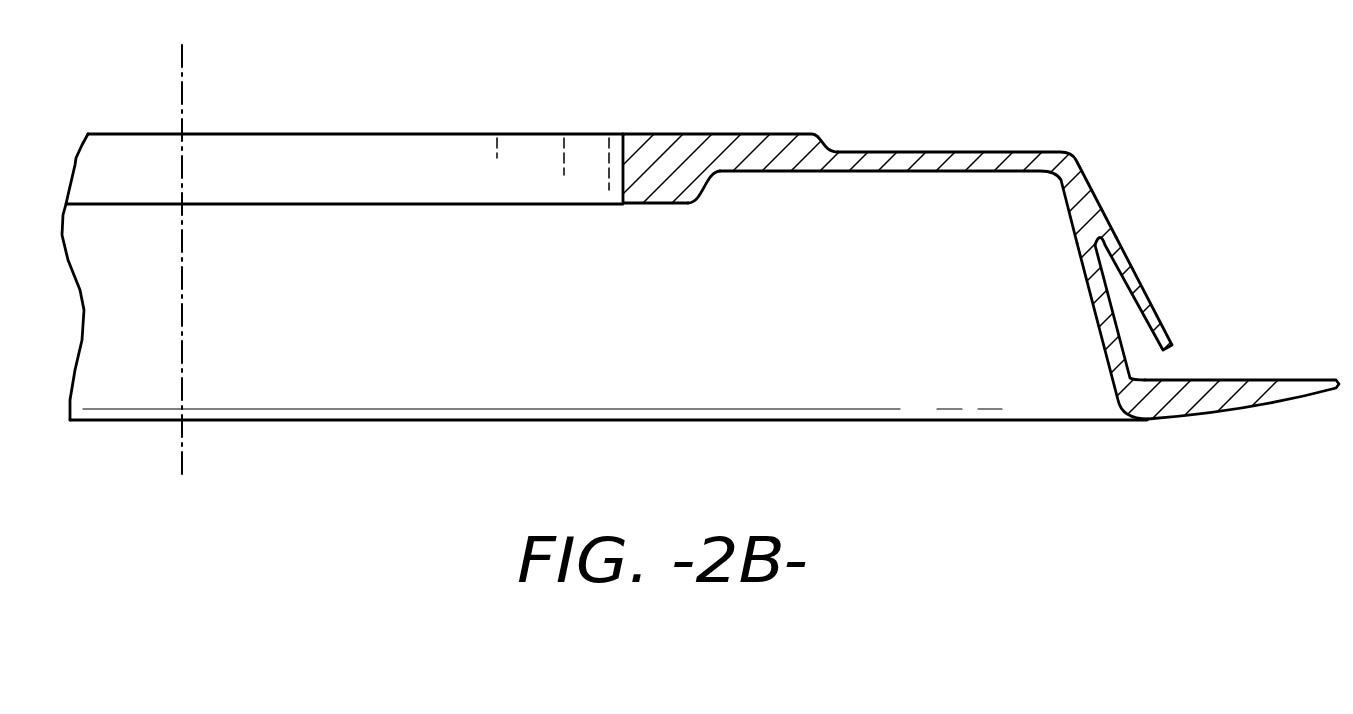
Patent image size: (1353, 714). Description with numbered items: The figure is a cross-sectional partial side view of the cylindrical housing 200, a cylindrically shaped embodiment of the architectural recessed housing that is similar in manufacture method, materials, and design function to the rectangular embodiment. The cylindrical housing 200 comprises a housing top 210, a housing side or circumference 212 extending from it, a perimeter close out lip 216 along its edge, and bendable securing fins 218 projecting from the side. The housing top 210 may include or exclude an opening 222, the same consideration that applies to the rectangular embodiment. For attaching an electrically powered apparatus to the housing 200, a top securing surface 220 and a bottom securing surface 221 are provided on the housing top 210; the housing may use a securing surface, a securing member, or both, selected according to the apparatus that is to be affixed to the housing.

The cylindrical housing 200 is at (952, 72).
The housing top 210 is at (988, 152).
The housing side 212 is at (1100, 338).
The perimeter close out lip 216 is at (1217, 412).
The bendable securing fins 218 is at (1148, 290).
The top securing surface 220 is at (688, 133).
The bottom securing surface 221 is at (658, 205).
The opening 222 is at (363, 162).